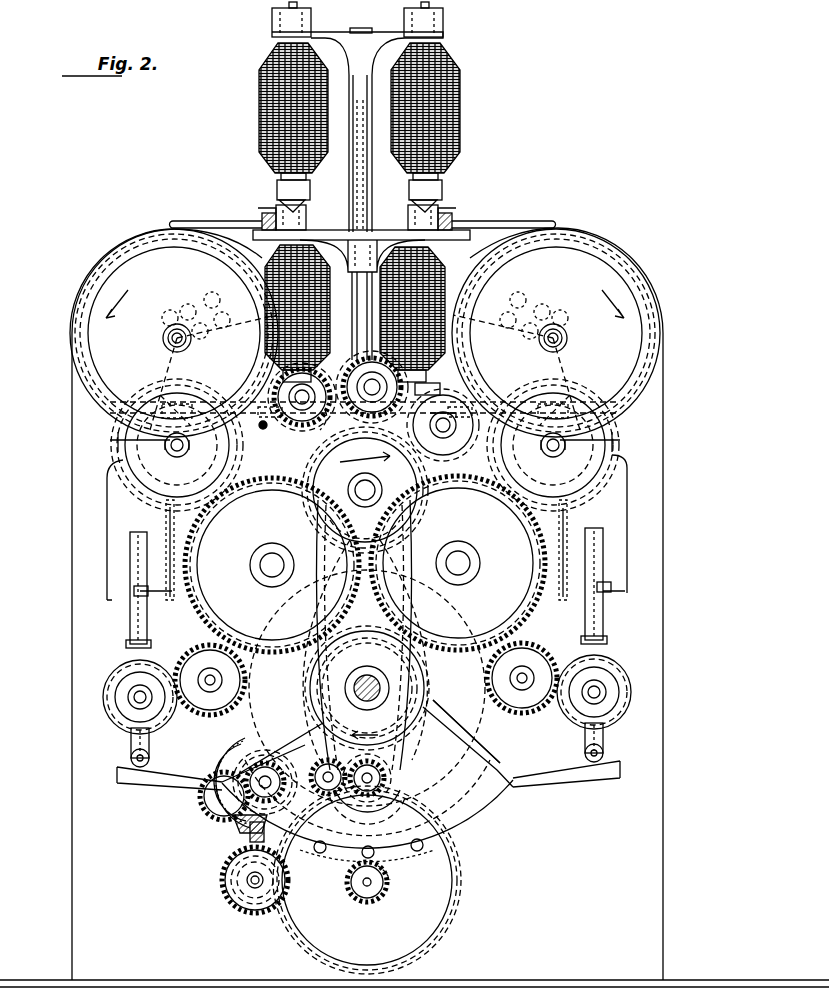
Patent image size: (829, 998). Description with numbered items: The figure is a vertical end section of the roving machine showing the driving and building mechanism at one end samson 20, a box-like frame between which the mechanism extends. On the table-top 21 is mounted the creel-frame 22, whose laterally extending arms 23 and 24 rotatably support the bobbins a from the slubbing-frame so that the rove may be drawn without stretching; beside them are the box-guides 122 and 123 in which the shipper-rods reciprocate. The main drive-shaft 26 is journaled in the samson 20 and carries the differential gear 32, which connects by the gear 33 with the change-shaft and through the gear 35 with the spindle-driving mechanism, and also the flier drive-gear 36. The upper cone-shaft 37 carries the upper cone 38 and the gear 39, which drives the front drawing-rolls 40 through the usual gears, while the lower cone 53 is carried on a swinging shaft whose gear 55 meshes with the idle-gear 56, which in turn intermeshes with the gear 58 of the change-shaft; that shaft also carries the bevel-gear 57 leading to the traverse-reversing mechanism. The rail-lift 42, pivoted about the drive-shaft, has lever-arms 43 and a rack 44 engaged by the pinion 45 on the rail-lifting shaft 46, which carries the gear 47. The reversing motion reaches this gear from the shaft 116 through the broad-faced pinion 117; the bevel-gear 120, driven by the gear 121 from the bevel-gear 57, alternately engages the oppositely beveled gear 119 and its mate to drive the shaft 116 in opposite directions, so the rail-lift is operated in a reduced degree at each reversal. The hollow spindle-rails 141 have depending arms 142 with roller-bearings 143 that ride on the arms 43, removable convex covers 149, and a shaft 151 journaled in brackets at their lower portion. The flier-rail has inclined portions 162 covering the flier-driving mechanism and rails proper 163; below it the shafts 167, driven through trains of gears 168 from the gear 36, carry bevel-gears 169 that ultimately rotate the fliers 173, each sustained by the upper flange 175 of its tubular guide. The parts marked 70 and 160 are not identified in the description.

The end samson 20 is at (414, 607).
The table-top 21 is at (460, 398).
The creel-frame 22 is at (352, 184).
The laterally-extending arms 23 is at (316, 34).
The laterally-extending arms 24 is at (322, 232).
The main drive-shaft 26 is at (367, 675).
The differential gear 32 is at (450, 765).
The gear 33 is at (265, 782).
The gear 35 is at (405, 735).
The flier drive-gear 36 is at (432, 710).
The upper cone-shaft 37 is at (355, 485).
The upper cone 38 is at (378, 478).
The gear 39 is at (365, 502).
The front drawing-rolls 40 is at (185, 345).
The rail-lift 42 is at (498, 795).
The lever-arms 43 is at (163, 782).
The rack 44 is at (322, 858).
The pinion 45 is at (388, 876).
The rail-lifting shaft 46 is at (368, 897).
The gear 47 is at (462, 886).
The lower cone 53 is at (390, 772).
The gear 55 is at (368, 798).
The idle-gear 56 is at (324, 766).
The bevel-gear 57 is at (244, 742).
The gear 58 is at (212, 806).
The gear 70 is at (266, 428).
The shaft 116 is at (252, 882).
The broad-faced pinion 117 is at (258, 892).
The oppositely-beveled gear 119 is at (250, 886).
The bevel-gear 120 is at (238, 838).
The gear 121 is at (249, 830).
The box-guide 122 is at (264, 212).
The box-guide 123 is at (466, 212).
The hollow spindle-rail 141 is at (195, 712).
The depending arms 142 is at (131, 742).
The roller-bearings 143 is at (149, 756).
The removable convex covers 149 is at (110, 682).
The shaft 151 is at (132, 702).
The rod 160 is at (148, 612).
The inclined portions 162 is at (160, 400).
The rails proper 163 is at (112, 443).
The shafts 167 is at (200, 460).
The trains of gears 168 is at (245, 480).
The bevel-gears 169 is at (189, 450).
The flier 173 is at (108, 505).
The upper flange 175 is at (130, 432).
The bobbins a is at (265, 105).